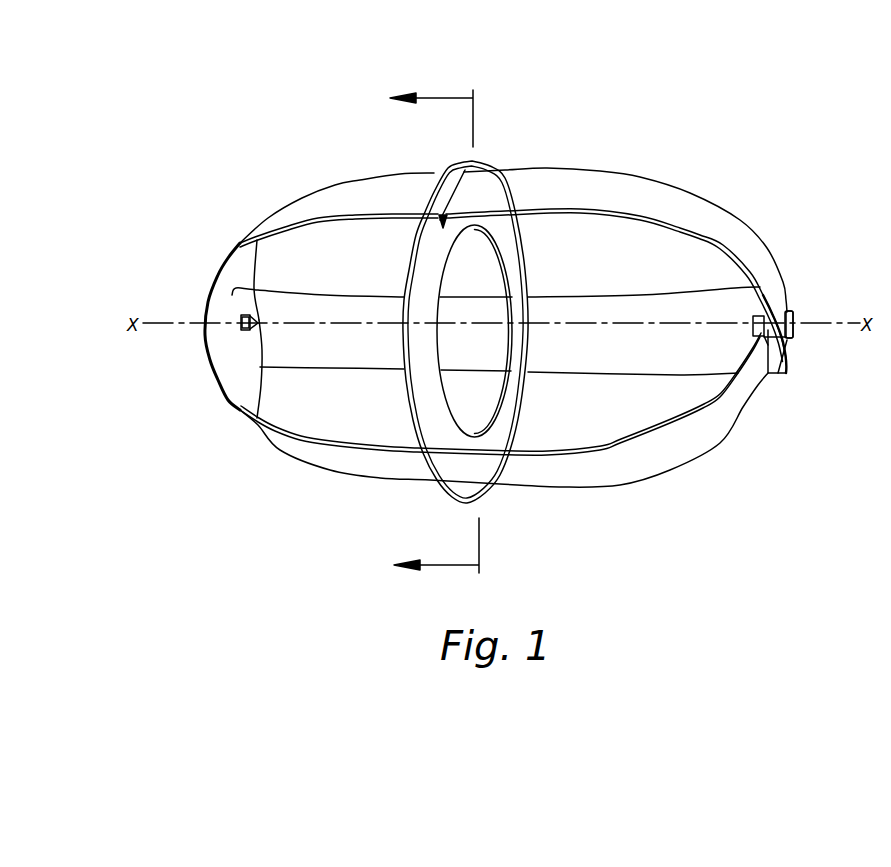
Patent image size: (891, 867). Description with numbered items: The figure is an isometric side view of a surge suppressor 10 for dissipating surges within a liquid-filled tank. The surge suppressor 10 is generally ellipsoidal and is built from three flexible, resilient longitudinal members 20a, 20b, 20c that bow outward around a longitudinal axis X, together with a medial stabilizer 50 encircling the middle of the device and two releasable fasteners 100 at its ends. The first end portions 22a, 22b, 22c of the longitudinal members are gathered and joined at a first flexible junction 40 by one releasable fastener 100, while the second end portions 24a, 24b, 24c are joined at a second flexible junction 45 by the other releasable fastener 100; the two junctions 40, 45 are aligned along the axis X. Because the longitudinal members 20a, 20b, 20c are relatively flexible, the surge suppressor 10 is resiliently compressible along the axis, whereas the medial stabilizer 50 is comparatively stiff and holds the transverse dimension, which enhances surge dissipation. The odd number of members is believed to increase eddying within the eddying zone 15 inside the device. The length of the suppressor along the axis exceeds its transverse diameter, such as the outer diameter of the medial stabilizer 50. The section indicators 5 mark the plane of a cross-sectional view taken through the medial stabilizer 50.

The surge suppressor 10 is at (656, 124).
The section line 5- 5 is at (447, 334).
The eddying zone 15 is at (495, 344).
The longitudinal member 20a is at (574, 196).
The longitudinal member 20b is at (609, 360).
The longitudinal member 20c is at (616, 483).
The first end portion 22a is at (787, 303).
The first end portion 22b is at (783, 375).
The first end portion 22c is at (764, 362).
The second end portion 24a is at (207, 342).
The second end portion 24b is at (262, 291).
The second end portion 24c is at (230, 370).
The first flexible junction 40 is at (800, 309).
The second flexible junction 45 is at (242, 314).
The medial stabilizer 50 is at (451, 437).
The releasable fastener 100 is at (235, 319).